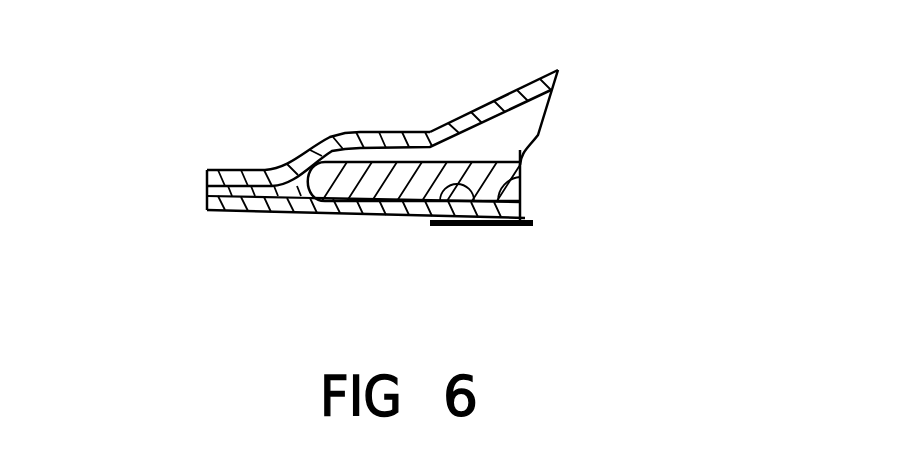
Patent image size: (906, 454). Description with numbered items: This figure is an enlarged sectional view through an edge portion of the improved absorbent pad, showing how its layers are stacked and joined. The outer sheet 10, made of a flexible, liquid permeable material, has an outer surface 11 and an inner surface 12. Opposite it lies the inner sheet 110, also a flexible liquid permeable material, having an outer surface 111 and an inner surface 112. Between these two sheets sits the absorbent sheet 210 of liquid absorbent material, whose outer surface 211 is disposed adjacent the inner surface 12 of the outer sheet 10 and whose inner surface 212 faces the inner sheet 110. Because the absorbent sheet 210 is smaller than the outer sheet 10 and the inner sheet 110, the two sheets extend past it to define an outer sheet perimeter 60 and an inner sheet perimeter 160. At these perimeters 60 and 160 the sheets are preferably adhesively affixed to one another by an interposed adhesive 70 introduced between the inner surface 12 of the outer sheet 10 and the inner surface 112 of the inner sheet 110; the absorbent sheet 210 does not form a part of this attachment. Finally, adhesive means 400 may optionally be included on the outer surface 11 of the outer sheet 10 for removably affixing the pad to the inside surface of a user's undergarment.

The outer sheet 10 is at (343, 220).
The outer surface 11 is at (387, 219).
The inner surface 12 is at (523, 185).
The outer sheet perimeter 60 is at (236, 211).
The interposed adhesive 70 is at (207, 190).
The inner sheet 110 is at (385, 132).
The outer surface 111 is at (482, 108).
The inner surface 112 is at (527, 96).
The inner sheet perimeter 160 is at (233, 170).
The absorbent sheet 210 is at (512, 173).
The outer surface 211 is at (490, 226).
The inner surface 212 is at (472, 162).
The adhesive means 400 is at (455, 226).